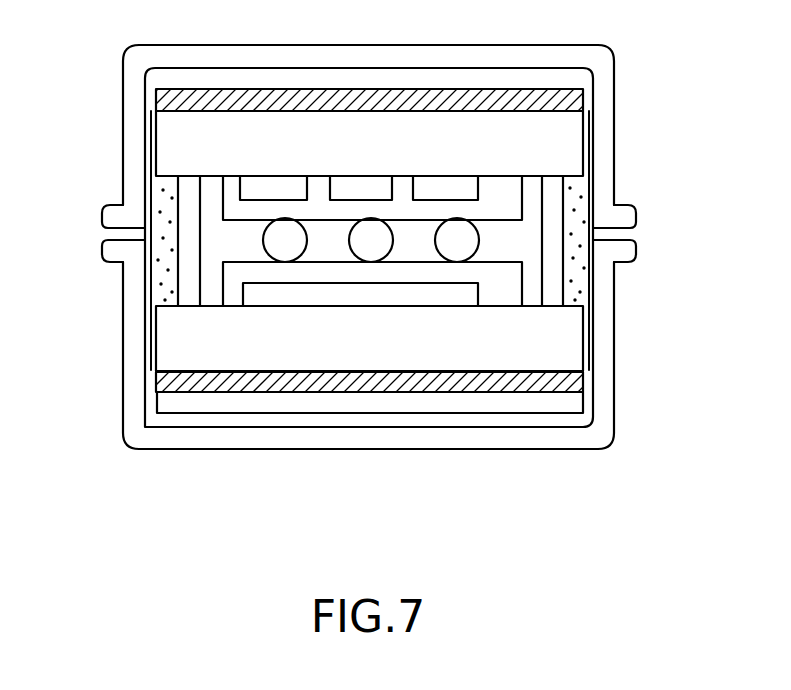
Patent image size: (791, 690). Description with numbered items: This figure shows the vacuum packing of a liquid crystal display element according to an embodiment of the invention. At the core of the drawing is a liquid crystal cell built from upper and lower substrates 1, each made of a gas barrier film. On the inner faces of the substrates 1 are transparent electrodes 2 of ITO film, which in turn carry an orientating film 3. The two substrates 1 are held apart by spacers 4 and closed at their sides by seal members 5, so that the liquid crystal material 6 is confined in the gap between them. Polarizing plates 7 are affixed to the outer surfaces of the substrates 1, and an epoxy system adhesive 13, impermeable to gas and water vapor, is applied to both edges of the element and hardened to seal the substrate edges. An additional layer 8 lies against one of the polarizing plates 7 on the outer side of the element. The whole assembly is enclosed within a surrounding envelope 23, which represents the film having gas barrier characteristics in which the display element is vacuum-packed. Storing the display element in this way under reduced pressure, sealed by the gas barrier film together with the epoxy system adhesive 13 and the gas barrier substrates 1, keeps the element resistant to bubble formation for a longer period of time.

The substrates 1 is at (553, 133).
The transparent electrodes 2 is at (437, 196).
The orientating film 3 is at (500, 200).
The spacers 4 is at (370, 243).
The seal members 5 is at (187, 248).
The liquid crystal material 6 is at (226, 238).
The polarizing plates 7 is at (182, 89).
The reflector plate 8 is at (553, 407).
The epoxy system adhesive 13 is at (153, 195).
The housing case 23 is at (156, 438).